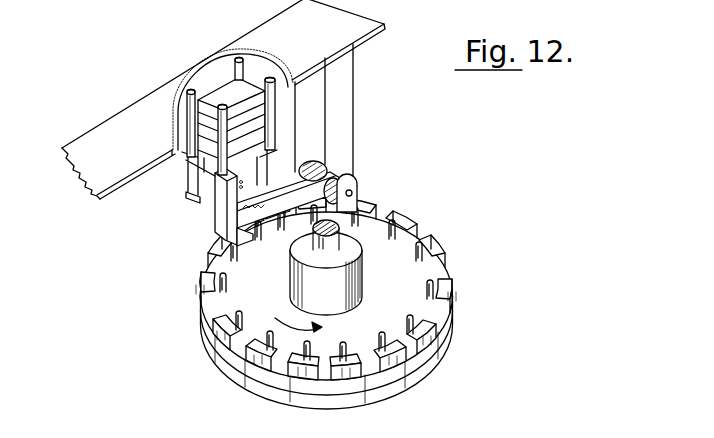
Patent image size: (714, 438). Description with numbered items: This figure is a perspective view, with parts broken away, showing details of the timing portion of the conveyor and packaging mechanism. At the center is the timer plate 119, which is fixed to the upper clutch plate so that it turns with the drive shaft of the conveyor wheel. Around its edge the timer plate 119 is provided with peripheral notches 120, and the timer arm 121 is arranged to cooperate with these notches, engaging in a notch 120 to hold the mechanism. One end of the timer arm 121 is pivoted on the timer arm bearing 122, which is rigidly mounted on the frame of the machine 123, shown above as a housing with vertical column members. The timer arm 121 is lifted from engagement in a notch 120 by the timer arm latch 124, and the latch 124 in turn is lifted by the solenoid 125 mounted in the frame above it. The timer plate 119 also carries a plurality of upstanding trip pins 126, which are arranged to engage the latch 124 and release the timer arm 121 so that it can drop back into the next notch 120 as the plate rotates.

The timer plate 119 is at (433, 264).
The peripheral notches 120 is at (448, 283).
The timer arm 121 is at (268, 203).
The timer arm bearing 122 is at (358, 200).
The frame of the machine 123 is at (345, 113).
The timer arm latch 124 is at (233, 219).
The solenoid 125 is at (205, 152).
The trip pins 126 is at (395, 229).